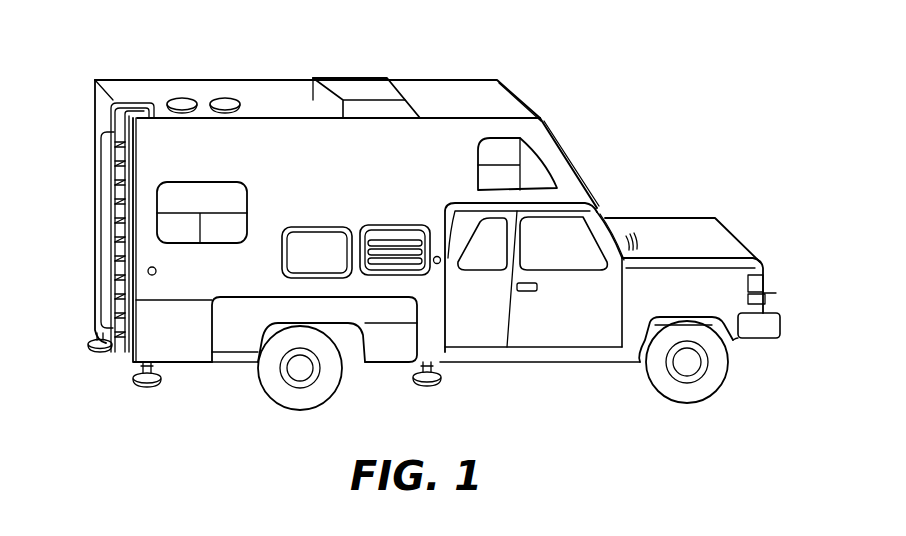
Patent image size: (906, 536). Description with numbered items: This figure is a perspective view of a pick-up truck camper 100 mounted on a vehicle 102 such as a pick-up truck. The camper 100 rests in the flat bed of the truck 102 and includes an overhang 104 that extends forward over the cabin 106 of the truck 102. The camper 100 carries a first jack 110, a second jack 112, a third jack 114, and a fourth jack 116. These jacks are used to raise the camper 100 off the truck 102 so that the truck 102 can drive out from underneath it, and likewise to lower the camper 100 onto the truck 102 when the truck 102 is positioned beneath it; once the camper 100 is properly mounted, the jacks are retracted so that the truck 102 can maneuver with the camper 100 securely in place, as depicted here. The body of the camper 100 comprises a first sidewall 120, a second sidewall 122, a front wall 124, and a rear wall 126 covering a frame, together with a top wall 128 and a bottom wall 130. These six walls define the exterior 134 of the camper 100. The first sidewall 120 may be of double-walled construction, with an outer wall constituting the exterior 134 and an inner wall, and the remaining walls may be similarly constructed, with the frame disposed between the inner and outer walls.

The pick-up truck camper 100 is at (490, 105).
The vehicle 102 is at (718, 239).
The overhang 104 is at (575, 190).
The cabin 106 is at (563, 257).
The first jack 110 is at (443, 382).
The second jack 112 is at (450, 78).
The third jack 114 is at (150, 388).
The fourth jack 116 is at (100, 352).
The first sidewall 120 is at (191, 348).
The second sidewall 122 is at (245, 78).
The front wall 124 is at (540, 118).
The rear wall 126 is at (103, 257).
The top wall 128 is at (298, 97).
The bottom wall 130 is at (133, 383).
The exterior 134 is at (148, 172).